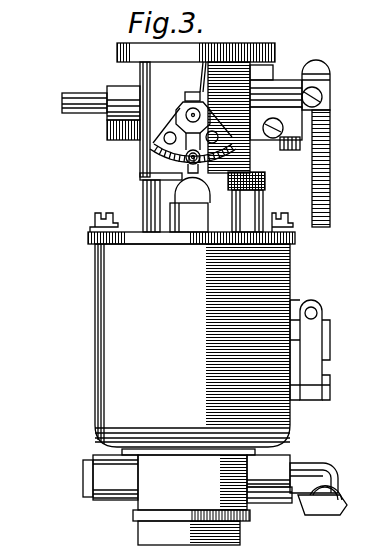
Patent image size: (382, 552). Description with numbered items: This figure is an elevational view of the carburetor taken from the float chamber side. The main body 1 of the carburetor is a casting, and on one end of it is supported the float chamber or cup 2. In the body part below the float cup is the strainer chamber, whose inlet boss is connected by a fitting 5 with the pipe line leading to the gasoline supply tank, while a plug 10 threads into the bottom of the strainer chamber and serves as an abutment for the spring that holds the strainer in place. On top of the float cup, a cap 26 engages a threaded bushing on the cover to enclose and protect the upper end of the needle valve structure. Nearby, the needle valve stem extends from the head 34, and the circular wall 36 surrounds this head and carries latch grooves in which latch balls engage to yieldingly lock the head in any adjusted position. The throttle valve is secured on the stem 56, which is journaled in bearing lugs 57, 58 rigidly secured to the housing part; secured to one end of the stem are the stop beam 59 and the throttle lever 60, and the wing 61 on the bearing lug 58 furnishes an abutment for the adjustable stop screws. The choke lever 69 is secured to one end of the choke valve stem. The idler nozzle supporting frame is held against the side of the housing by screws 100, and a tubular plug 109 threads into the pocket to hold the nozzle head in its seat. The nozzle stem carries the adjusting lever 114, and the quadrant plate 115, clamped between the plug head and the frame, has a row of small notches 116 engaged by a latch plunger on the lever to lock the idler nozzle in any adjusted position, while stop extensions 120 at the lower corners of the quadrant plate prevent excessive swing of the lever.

The main body 1 is at (165, 497).
The float chamber or cup 2 is at (103, 324).
The fitting 5 is at (315, 470).
The plug 10 is at (239, 532).
The cap 26 is at (185, 220).
The head 34 is at (264, 196).
The circular wall 36 is at (286, 216).
The stem 56 is at (72, 106).
The bearing lug 57 is at (122, 90).
The bearing lug 58 is at (261, 50).
The stop beam 59 is at (288, 88).
The throttle lever 60 is at (324, 112).
The wing 61 is at (256, 145).
The choke lever 69 is at (323, 343).
The screws 100 is at (102, 126).
The tubular plug 109 is at (188, 91).
The adjusting lever 114 is at (204, 62).
The quadrant plate 115 is at (262, 168).
The notches 116 is at (166, 152).
The stop extensions 120 is at (152, 146).